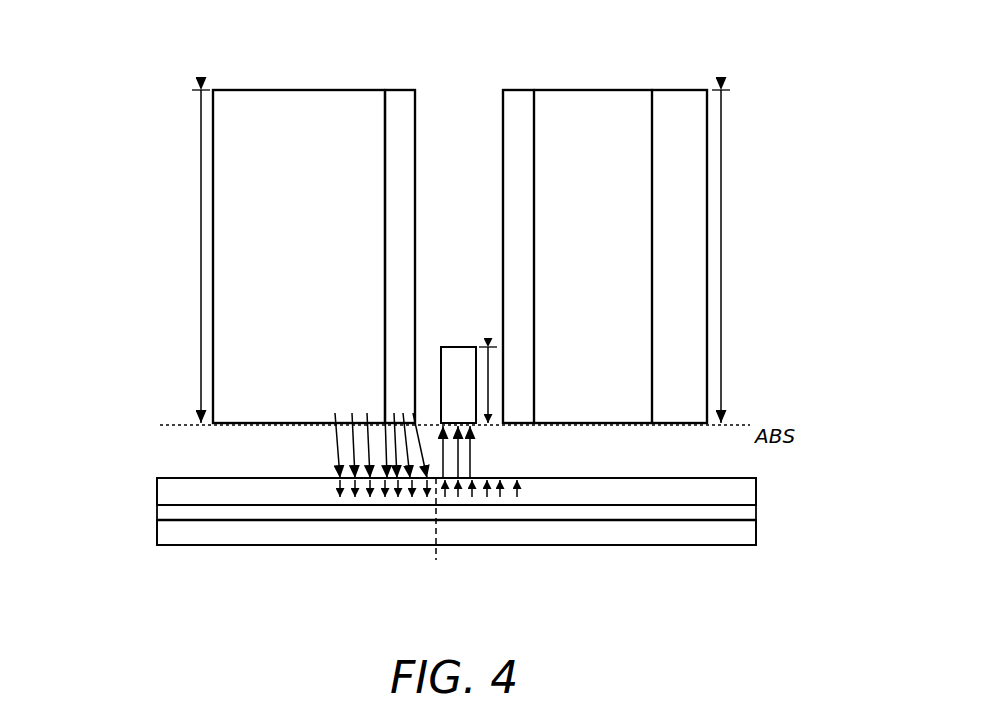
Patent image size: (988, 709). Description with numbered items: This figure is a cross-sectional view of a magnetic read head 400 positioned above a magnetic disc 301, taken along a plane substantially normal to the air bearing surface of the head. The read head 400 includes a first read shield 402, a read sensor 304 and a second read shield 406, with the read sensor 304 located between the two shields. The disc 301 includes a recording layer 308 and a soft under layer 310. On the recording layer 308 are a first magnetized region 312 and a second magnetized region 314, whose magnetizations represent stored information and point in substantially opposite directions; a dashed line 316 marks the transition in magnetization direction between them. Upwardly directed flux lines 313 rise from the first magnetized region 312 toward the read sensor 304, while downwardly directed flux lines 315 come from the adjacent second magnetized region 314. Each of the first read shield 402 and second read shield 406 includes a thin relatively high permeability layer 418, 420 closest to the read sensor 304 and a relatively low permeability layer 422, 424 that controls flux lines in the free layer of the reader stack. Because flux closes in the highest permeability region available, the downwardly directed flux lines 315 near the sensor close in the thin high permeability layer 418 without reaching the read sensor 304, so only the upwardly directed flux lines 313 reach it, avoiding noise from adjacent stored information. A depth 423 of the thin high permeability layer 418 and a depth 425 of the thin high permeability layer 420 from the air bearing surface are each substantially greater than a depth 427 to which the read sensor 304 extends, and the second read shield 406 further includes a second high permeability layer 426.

The magnetic disc 301 is at (127, 500).
The read sensor 304 is at (465, 347).
The recording layer 308 is at (162, 481).
The soft under layer 310 is at (166, 528).
The first magnetized region 312 is at (487, 500).
The upwardly directed flux lines 313 is at (490, 449).
The second magnetized region 314 is at (392, 497).
The downwardly directed flux lines 315 is at (335, 462).
The dashed line 316 is at (437, 553).
The magnetic read head 400 is at (750, 203).
The first read shield 402 is at (415, 89).
The second read shield 406 is at (707, 89).
The thin high permeability layer 418 is at (400, 128).
The thin high permeability layer 420 is at (525, 117).
The low permeability layer 422 is at (299, 256).
The depth 423 is at (200, 167).
The low permeability layer 424 is at (593, 256).
The depth 425 is at (722, 143).
The second high permeability layer 426 is at (679, 256).
The depth 427 is at (489, 392).